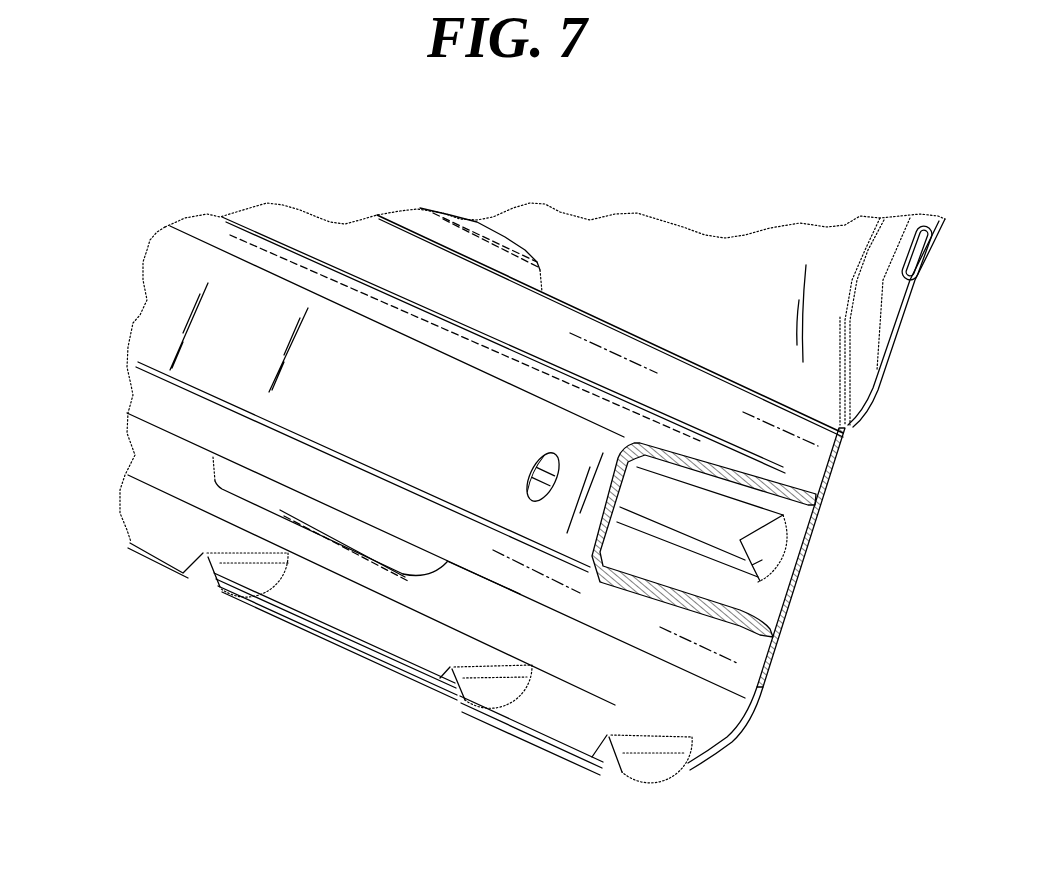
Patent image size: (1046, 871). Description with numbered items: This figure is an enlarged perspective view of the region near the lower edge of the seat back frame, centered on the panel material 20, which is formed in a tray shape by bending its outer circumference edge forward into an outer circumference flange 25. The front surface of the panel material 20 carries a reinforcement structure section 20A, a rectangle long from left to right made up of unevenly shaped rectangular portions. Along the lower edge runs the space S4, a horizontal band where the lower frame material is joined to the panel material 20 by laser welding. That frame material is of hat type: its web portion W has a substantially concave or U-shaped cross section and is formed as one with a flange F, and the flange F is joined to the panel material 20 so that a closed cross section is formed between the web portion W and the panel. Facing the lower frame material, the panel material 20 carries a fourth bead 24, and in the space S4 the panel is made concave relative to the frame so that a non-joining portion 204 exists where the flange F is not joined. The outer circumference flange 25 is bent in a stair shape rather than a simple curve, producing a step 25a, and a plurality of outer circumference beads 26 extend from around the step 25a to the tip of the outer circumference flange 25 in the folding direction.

The panel material 20 is at (722, 248).
The reinforcement structure section 20A is at (157, 307).
The web portion W is at (143, 333).
The flange F is at (703, 380).
The fourth bead 24 is at (733, 537).
The outer circumference flange 25 is at (508, 730).
The step 25a is at (694, 771).
The outer circumference bead 26 is at (202, 573).
The non-joining portion 204 is at (331, 552).
The space S4 is at (460, 577).